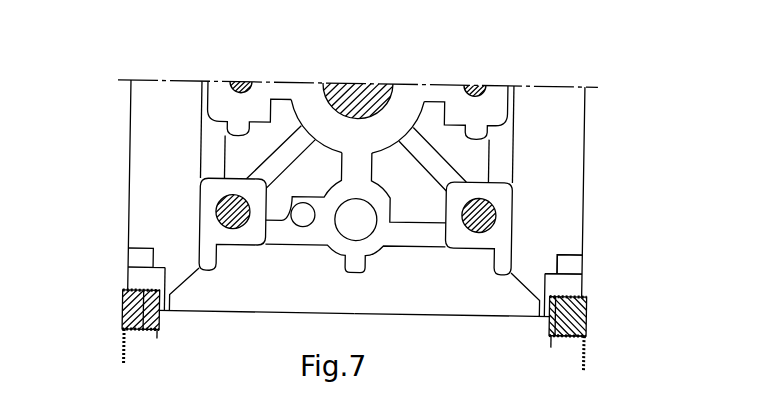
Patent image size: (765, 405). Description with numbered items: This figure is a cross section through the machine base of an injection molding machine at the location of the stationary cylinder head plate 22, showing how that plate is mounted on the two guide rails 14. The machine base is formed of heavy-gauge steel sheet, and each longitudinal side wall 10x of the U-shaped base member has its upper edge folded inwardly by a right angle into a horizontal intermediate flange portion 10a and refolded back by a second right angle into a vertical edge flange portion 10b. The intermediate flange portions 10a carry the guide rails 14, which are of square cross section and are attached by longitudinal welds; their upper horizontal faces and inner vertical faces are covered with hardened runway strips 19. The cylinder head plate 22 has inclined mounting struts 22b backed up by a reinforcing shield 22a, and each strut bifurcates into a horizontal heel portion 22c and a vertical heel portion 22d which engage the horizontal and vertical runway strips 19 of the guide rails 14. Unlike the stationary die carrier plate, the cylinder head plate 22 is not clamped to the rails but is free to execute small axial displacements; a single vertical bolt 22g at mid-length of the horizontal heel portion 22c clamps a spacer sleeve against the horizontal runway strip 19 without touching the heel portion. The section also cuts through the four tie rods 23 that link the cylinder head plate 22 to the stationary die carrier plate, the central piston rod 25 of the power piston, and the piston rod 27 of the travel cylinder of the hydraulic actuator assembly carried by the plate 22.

The stationary cylinder head plate 22 is at (587, 167).
The reinforcing shield 22a is at (160, 117).
The inclined mounting struts 22b is at (183, 258).
The horizontal heel portion 22c is at (147, 282).
The vertical heel portion 22d is at (167, 299).
The vertical bolt 22g is at (573, 263).
The tie rods 23 is at (490, 212).
The piston rod 25 is at (349, 84).
The piston rod of travel cylinder 27 is at (481, 87).
The guide rails 14 is at (142, 313).
The runway strips 19 is at (158, 325).
The intermediate flange portions 10a is at (573, 338).
The edge flange portions 10b is at (552, 346).
The longitudinal side walls 10x is at (585, 356).